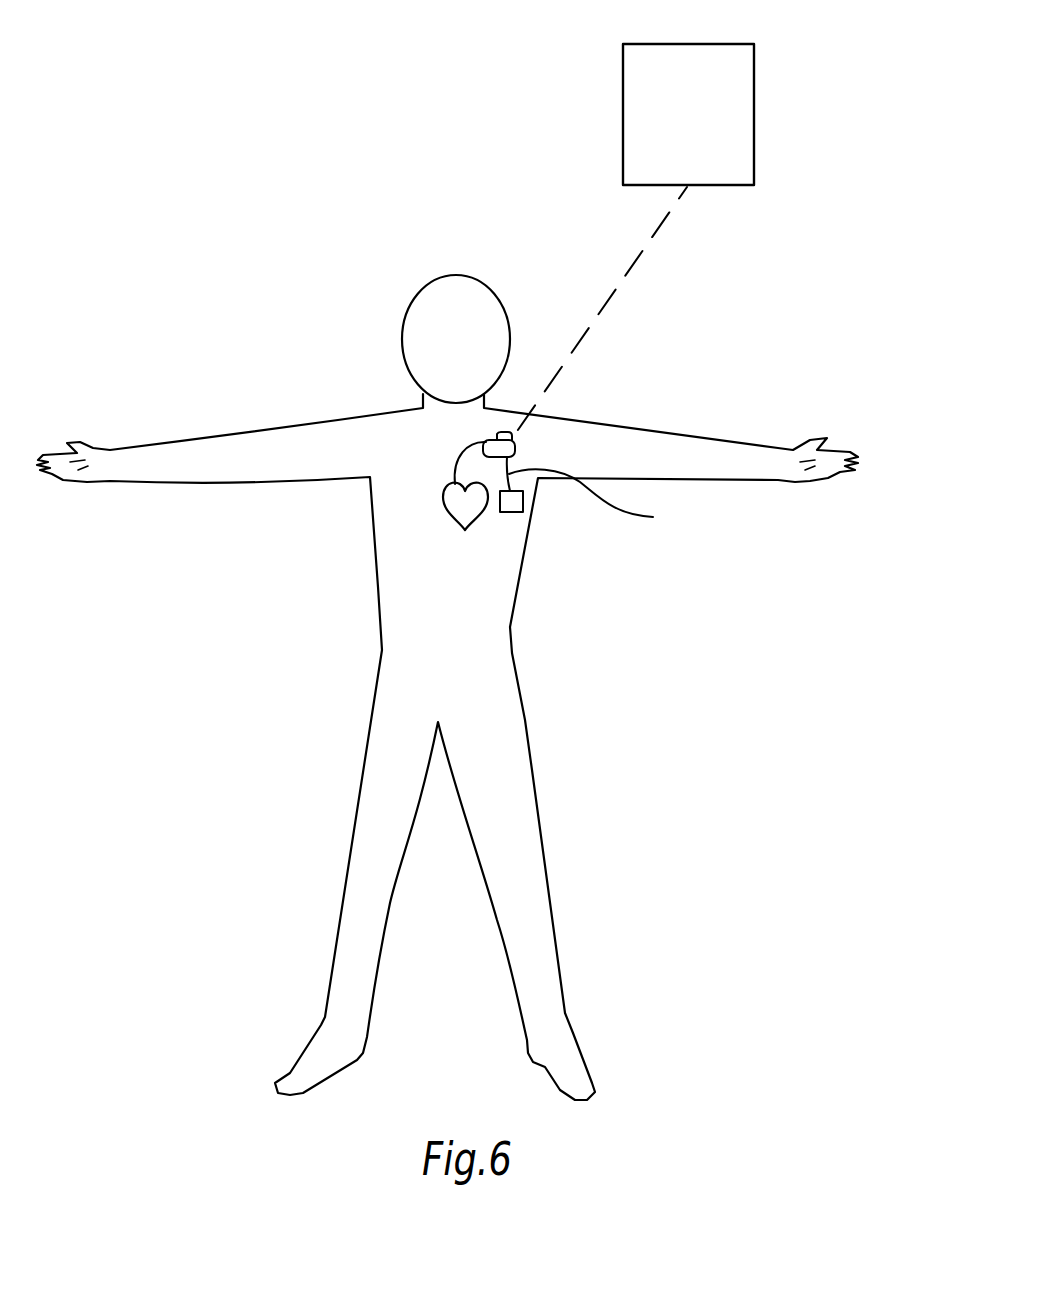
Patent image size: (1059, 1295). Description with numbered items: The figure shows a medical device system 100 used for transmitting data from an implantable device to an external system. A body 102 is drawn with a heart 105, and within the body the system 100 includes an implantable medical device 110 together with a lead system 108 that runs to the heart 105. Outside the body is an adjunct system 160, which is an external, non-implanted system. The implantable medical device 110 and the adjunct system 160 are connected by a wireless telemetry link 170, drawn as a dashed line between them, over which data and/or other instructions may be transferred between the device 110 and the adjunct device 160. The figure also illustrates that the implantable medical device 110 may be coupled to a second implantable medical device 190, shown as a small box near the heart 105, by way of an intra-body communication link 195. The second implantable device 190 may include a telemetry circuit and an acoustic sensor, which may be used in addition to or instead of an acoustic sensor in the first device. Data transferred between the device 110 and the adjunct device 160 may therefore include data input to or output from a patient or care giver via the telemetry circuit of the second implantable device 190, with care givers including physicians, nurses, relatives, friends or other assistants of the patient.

The medical device system 100 is at (190, 52).
The body 102 is at (388, 587).
The heart 105 is at (463, 531).
The lead system 108 is at (454, 470).
The implantable medical device 110 is at (515, 450).
The adjunct system 160 is at (754, 113).
The wireless telemetry link 170 is at (601, 316).
The second implantable medical device 190 is at (523, 501).
The intra-body communication link 195 is at (598, 500).